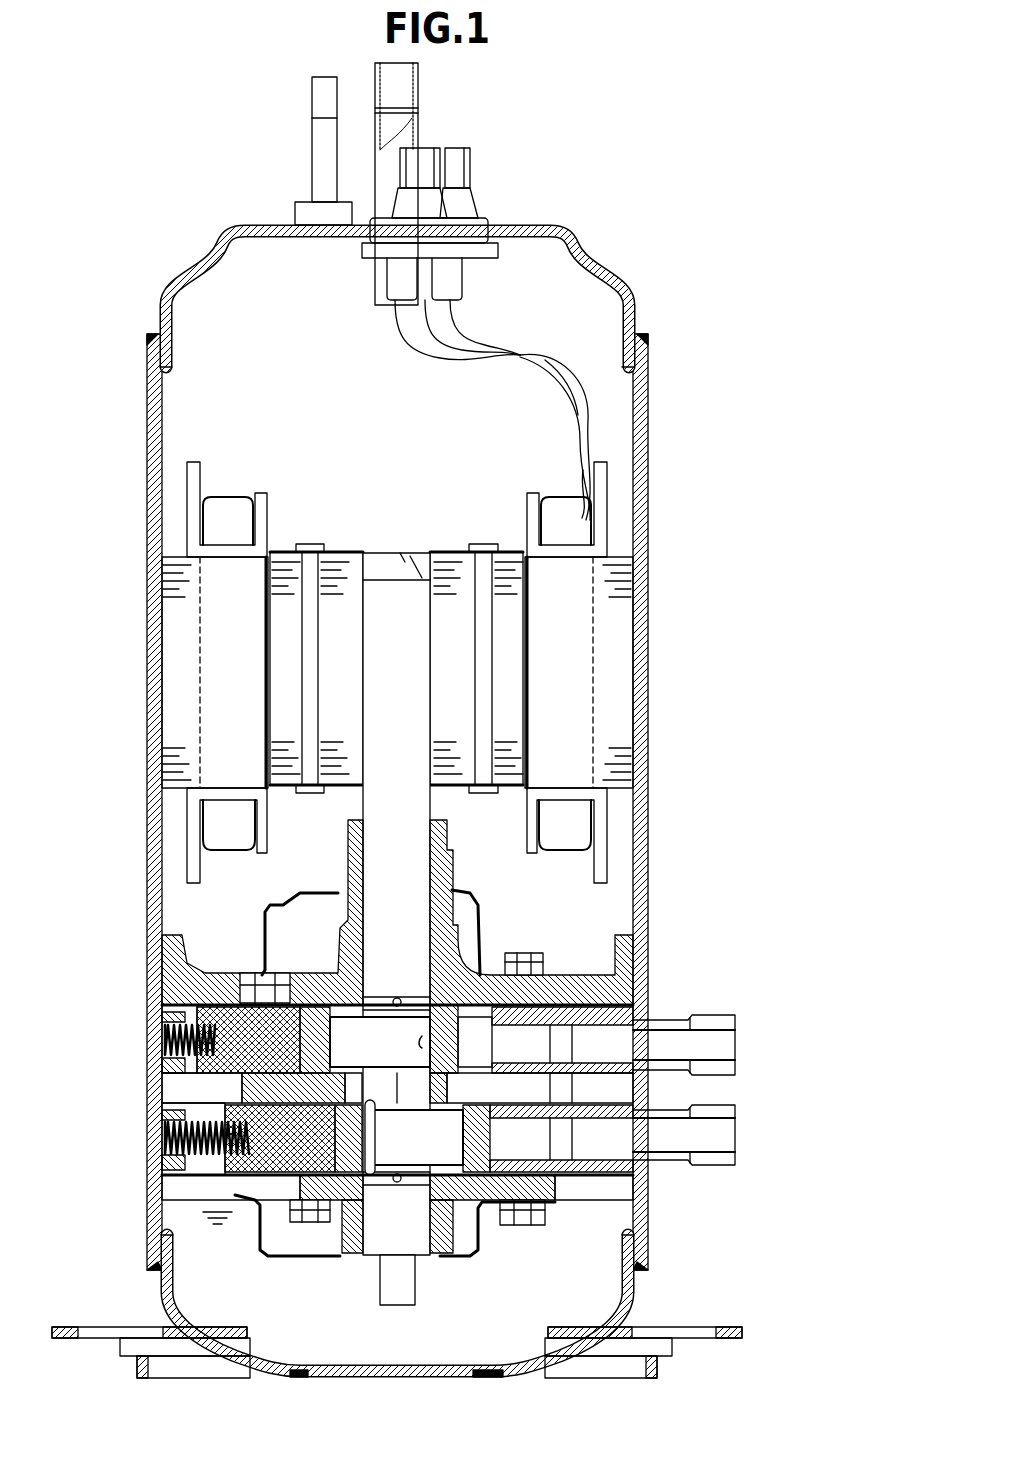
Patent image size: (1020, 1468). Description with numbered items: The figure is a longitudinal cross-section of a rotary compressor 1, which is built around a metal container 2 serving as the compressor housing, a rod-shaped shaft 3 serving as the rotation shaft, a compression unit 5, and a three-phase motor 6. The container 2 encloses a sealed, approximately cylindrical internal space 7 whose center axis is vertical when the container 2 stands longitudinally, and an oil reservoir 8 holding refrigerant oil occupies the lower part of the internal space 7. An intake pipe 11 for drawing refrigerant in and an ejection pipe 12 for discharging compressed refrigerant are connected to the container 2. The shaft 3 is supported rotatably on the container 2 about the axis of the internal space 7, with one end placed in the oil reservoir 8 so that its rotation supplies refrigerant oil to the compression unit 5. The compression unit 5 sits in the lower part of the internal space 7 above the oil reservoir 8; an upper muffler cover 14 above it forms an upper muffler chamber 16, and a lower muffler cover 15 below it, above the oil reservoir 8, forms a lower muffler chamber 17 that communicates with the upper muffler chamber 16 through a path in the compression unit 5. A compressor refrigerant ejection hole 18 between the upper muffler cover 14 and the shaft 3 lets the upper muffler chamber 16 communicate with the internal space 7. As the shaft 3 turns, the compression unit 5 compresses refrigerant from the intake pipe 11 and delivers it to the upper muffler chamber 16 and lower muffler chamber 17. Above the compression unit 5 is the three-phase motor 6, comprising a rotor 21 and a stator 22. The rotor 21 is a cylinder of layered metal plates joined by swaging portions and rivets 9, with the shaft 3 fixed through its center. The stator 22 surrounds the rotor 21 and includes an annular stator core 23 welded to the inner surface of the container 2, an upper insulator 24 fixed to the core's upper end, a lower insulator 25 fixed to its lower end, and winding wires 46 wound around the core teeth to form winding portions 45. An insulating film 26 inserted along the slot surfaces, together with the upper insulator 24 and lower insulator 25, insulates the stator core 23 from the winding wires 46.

The compressor 1 is at (693, 129).
The container 2 is at (196, 262).
The shaft 3 is at (355, 803).
The compression unit 5 is at (219, 1193).
The three-phase motor 6 is at (224, 466).
The internal space 7 is at (271, 265).
The oil reservoir 8 is at (197, 1290).
The rivets 9 is at (483, 668).
The intake pipe 11 is at (712, 1100).
The ejection pipe 12 is at (419, 88).
The upper muffler cover 14 is at (480, 890).
The lower muffler cover 15 is at (470, 1262).
The upper muffler chamber 16 is at (462, 938).
The lower muffler chamber 17 is at (470, 1228).
The compressor refrigerant ejection hole 18 is at (455, 885).
The rotor 21 is at (455, 548).
The stator 22 is at (532, 487).
The stator core 23 is at (180, 672).
The upper insulator 24 is at (195, 550).
The lower insulator 25 is at (198, 838).
The insulating film 26 is at (600, 610).
The winding portions 45 is at (238, 497).
The winding wires 46 is at (218, 513).